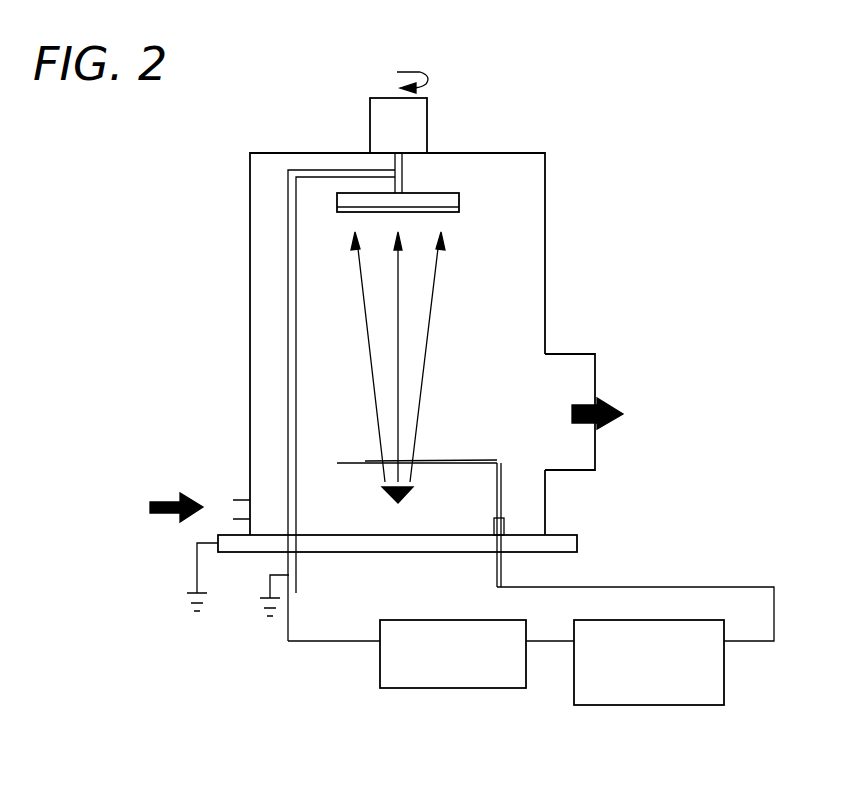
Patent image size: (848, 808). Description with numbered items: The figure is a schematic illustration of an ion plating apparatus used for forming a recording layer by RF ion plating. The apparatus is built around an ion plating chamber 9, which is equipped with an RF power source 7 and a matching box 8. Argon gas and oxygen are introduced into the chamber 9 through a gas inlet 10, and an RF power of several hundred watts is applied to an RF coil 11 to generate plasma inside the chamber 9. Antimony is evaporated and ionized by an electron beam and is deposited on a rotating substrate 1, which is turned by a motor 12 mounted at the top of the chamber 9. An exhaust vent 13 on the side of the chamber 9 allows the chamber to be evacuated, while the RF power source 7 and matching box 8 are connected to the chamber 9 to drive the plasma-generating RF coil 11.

The substrate 1 is at (448, 193).
The RF power source 7 is at (448, 672).
The matching box 8 is at (652, 686).
The ion plating chamber 9 is at (250, 282).
The gas inlet 10 is at (238, 500).
The RF coil 11 is at (350, 461).
The motor 12 is at (381, 123).
The exhaust vent 13 is at (568, 350).